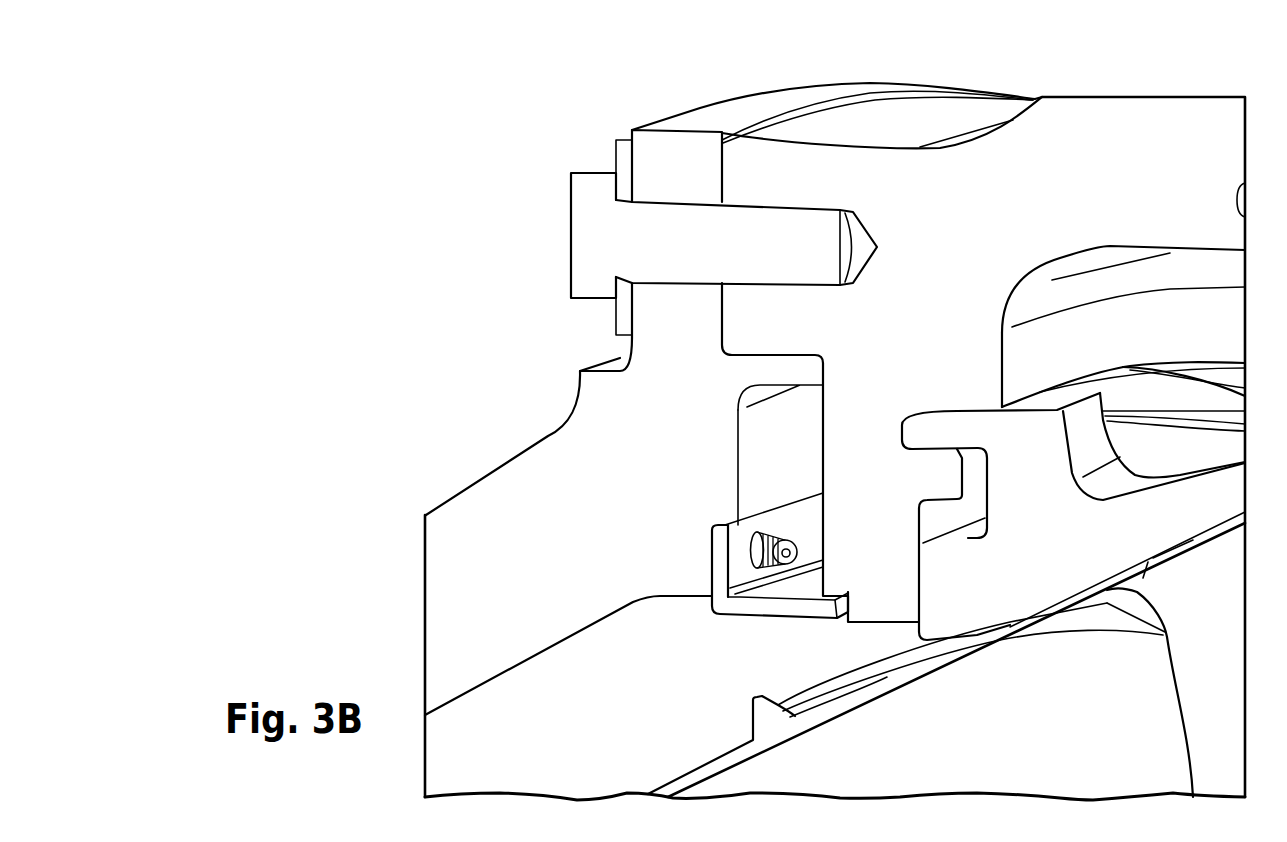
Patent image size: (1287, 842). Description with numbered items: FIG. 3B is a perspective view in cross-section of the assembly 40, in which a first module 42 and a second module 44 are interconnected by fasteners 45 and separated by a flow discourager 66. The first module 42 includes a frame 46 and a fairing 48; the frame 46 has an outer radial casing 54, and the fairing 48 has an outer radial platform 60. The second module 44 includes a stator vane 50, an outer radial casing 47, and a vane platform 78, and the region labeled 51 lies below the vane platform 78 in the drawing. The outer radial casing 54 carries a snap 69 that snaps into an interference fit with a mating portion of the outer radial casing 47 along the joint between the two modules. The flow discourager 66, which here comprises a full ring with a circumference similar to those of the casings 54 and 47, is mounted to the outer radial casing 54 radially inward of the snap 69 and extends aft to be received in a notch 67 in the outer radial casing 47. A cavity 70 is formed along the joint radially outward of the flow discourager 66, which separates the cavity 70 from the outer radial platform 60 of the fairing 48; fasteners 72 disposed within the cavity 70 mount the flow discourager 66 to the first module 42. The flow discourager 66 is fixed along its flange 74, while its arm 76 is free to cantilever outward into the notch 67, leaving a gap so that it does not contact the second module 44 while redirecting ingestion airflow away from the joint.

The assembly 40 is at (516, 99).
The first module 42 is at (441, 315).
The second module 44 is at (1032, 89).
The fasteners 45 is at (594, 238).
The frame 46 is at (411, 425).
The outer radial casing 47 is at (862, 471).
The fairing 48 is at (759, 768).
The stator vane 50 is at (1160, 692).
The wall 51 is at (971, 674).
The outer radial casing 54 is at (568, 656).
The outer radial platform 60 is at (702, 775).
The flow discourager 66 is at (710, 526).
The notch 67 is at (853, 596).
The snap 69 is at (778, 370).
The cavity 70 is at (762, 468).
The fasteners 72 is at (775, 533).
The flange 74 is at (722, 573).
The arm 76 is at (753, 607).
The vane platform 78 is at (1073, 516).